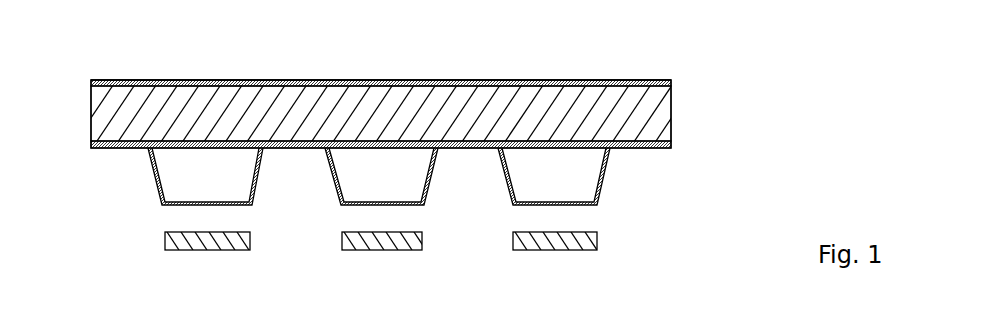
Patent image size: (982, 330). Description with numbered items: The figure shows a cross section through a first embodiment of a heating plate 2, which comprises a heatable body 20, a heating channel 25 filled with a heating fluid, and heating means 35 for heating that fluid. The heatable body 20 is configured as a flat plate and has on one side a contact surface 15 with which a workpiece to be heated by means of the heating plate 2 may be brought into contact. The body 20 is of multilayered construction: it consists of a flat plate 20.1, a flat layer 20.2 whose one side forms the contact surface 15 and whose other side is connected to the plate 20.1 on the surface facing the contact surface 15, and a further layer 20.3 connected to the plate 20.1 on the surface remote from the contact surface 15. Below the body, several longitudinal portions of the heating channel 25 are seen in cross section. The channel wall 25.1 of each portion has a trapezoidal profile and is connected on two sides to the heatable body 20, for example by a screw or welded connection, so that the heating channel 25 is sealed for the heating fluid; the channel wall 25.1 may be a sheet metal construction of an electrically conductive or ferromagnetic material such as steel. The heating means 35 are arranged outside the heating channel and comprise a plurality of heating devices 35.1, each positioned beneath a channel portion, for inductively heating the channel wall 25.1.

The heating plate 2 is at (641, 46).
The contact surface 15 is at (377, 80).
The heatable body 20 is at (91, 61).
The flat plate 20.1 is at (657, 110).
The flat layer 20.2 is at (671, 80).
The layer 20.3 is at (671, 145).
The heating channel 25 is at (221, 179).
The channel wall 25.1 is at (172, 203).
The heating means 35 is at (627, 242).
The heating device 35.1 is at (204, 235).